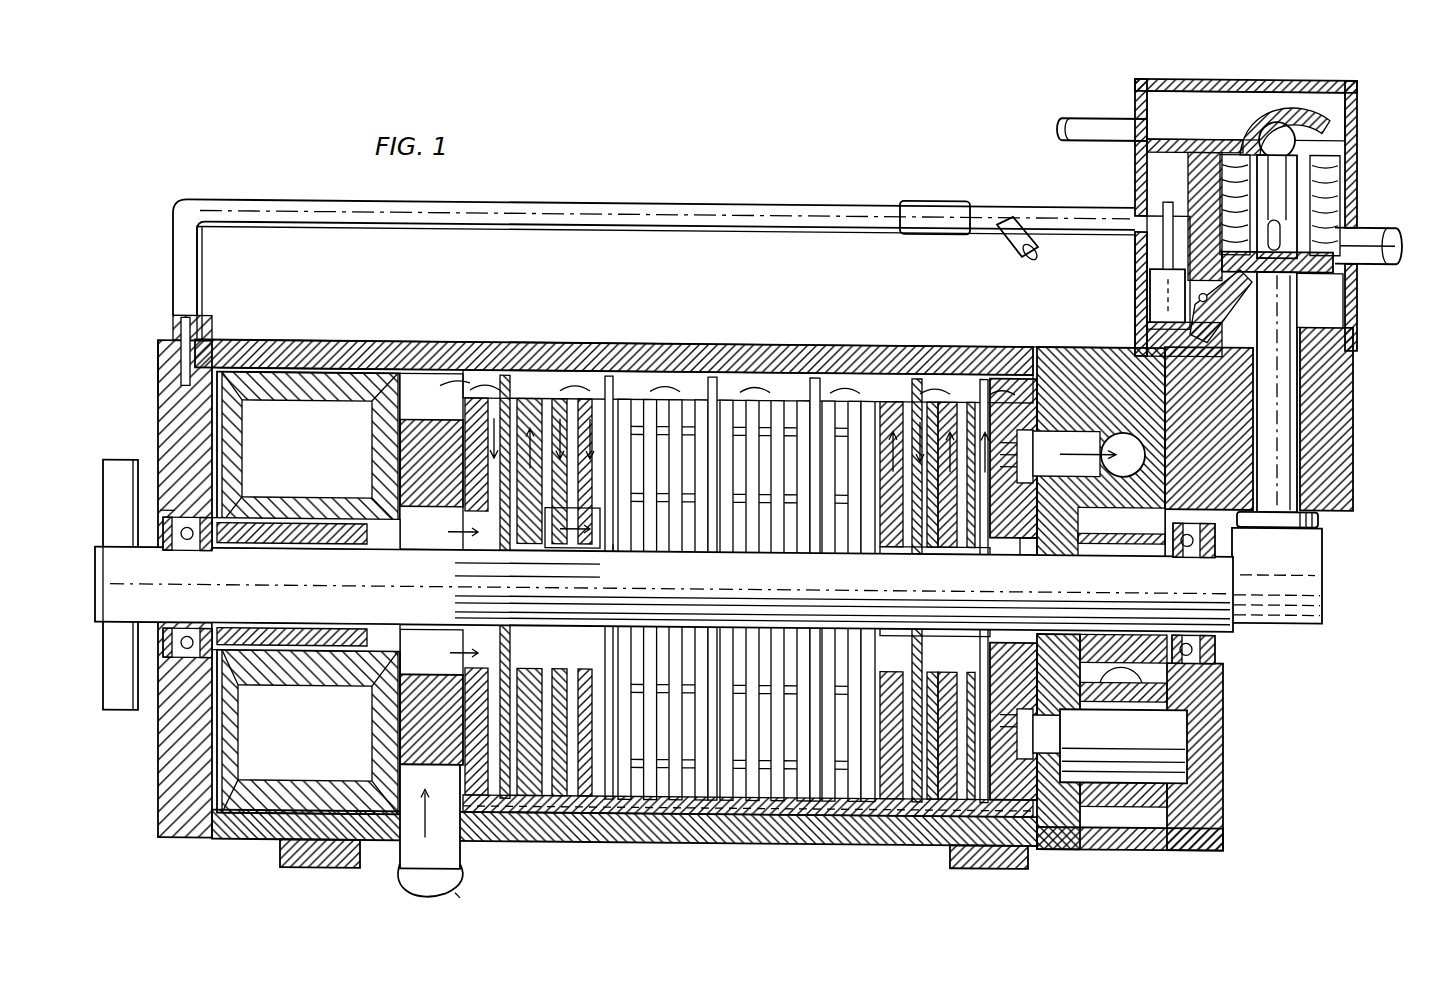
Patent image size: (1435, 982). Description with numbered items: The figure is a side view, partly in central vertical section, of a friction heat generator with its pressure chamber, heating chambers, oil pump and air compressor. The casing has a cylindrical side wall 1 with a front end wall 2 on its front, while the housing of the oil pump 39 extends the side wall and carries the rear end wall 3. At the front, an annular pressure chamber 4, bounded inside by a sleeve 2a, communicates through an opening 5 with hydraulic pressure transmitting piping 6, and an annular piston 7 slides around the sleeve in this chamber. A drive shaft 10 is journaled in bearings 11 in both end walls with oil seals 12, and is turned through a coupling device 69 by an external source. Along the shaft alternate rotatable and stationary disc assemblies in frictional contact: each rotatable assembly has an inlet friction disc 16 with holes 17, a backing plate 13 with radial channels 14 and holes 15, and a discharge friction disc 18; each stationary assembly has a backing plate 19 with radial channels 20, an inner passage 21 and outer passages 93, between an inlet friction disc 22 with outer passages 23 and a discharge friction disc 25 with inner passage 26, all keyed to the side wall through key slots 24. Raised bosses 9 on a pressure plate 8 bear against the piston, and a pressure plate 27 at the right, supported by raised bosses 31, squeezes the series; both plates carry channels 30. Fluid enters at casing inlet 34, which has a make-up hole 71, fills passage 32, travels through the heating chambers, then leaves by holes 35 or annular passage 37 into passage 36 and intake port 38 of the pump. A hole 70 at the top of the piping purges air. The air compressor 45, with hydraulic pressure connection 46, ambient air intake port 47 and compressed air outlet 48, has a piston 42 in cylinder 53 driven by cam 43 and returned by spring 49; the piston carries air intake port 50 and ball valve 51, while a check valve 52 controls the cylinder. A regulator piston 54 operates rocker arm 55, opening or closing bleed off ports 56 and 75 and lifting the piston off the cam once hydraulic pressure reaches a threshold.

The side wall 1 is at (380, 345).
The front end wall 2 is at (157, 840).
The sleeve 2a is at (160, 520).
The rear end wall 3 is at (1223, 822).
The pressure chamber 4 is at (240, 442).
The opening 5 is at (165, 352).
The hydraulic pressure transmitting piping 6 is at (652, 204).
The annular piston 7 is at (300, 372).
The pressure plate 8 is at (462, 404).
The raised bosses 9 is at (400, 458).
The drive shaft 10 is at (1235, 628).
The bearings 11 is at (168, 700).
The oil seals 12 is at (165, 525).
The rotatable backing plate 13 is at (530, 400).
The radial channels 14 is at (505, 400).
The holes 15 is at (945, 630).
The rotatable inlet friction disc 16 is at (505, 377).
The holes 17 is at (435, 552).
The rotatable discharge friction disc 18 is at (585, 400).
The stationary backing plate 19 is at (880, 400).
The radial channels 20 is at (620, 815).
The inner passage 21 is at (575, 552).
The stationary inlet friction disc 22 is at (830, 400).
The outer passages 23 is at (760, 400).
The key slots 24 is at (870, 815).
The stationary discharge friction disc 25 is at (945, 400).
The inner passage 26 is at (920, 552).
The pressure plate 27 is at (1020, 376).
The channels 30 is at (1028, 250).
The raised bosses 31 is at (1047, 495).
The passage 32 is at (455, 372).
The casing inlet 34 is at (400, 872).
The holes 35 is at (1060, 745).
The passage 36 is at (1078, 540).
The annular passage 37 is at (1003, 552).
The intake port 38 is at (1085, 430).
The oil pump 39 is at (1070, 846).
The piston 42 is at (1320, 515).
The cam 43 is at (1322, 605).
The air compressor 45 is at (1268, 80).
The hydraulic pressure connection 46 is at (1125, 200).
The ambient air intake port 47 is at (1380, 258).
The compressed air outlet 48 is at (1120, 112).
The spring 49 is at (1340, 170).
The air intake port 50 is at (1292, 225).
The ball valve 51 is at (1300, 150).
The check valve 52 is at (1325, 112).
The cylinder 53 is at (1245, 140).
The regulator piston 54 is at (1150, 290).
The rocker arm 55 is at (1255, 300).
The bleed off port 56 is at (1200, 150).
The coupling device 69 is at (120, 716).
The hole 70 is at (930, 204).
The hole 71 is at (465, 866).
The bleed off port 75 is at (1140, 152).
The outer passages 93 is at (660, 400).